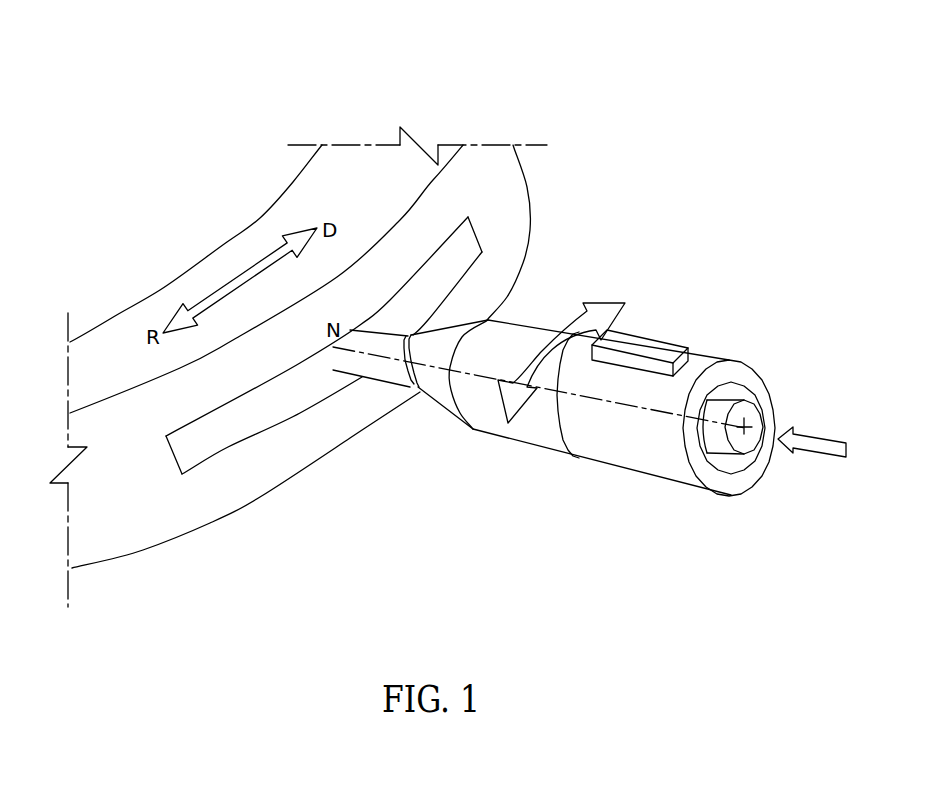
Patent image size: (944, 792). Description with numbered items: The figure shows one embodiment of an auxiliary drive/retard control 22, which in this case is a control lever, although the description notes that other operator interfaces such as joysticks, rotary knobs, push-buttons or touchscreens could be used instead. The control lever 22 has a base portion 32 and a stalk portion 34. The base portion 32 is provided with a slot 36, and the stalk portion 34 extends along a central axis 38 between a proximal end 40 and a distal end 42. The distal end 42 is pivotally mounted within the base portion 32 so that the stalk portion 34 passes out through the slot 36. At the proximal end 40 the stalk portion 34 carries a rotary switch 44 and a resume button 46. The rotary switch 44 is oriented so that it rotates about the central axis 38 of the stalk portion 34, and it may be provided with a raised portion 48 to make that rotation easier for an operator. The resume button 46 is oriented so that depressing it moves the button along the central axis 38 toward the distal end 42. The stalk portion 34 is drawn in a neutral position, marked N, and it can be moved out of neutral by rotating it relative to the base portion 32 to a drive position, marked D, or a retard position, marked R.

The auxiliary drive/retard control 22 is at (337, 80).
The base portion 32 is at (426, 188).
The stalk portion 34 is at (525, 441).
The slot 36 is at (228, 445).
The central axis 38 is at (759, 413).
The proximal end 40 is at (769, 488).
The distal end 42 is at (334, 378).
The rotary switch 44 is at (763, 354).
The resume button 46 is at (713, 443).
The raised portion 48 is at (648, 344).